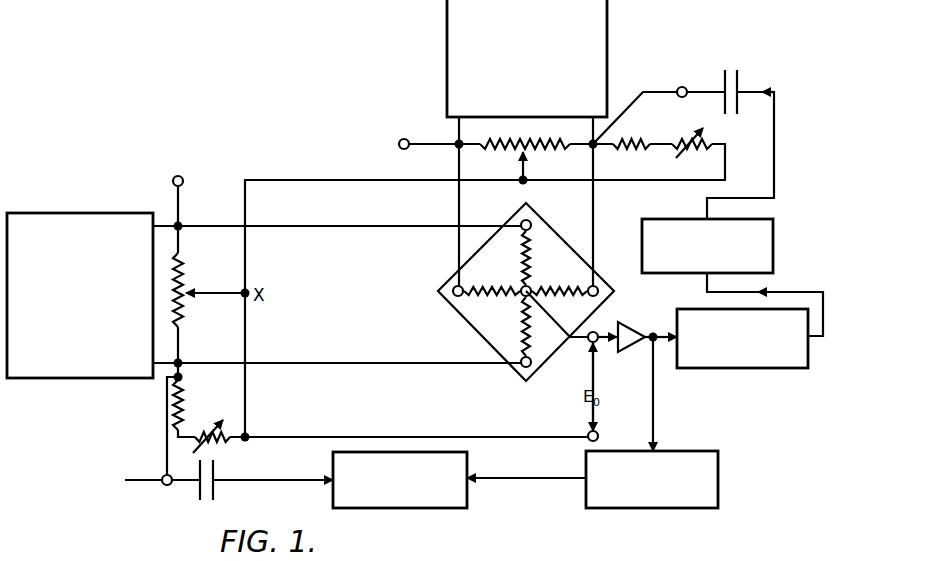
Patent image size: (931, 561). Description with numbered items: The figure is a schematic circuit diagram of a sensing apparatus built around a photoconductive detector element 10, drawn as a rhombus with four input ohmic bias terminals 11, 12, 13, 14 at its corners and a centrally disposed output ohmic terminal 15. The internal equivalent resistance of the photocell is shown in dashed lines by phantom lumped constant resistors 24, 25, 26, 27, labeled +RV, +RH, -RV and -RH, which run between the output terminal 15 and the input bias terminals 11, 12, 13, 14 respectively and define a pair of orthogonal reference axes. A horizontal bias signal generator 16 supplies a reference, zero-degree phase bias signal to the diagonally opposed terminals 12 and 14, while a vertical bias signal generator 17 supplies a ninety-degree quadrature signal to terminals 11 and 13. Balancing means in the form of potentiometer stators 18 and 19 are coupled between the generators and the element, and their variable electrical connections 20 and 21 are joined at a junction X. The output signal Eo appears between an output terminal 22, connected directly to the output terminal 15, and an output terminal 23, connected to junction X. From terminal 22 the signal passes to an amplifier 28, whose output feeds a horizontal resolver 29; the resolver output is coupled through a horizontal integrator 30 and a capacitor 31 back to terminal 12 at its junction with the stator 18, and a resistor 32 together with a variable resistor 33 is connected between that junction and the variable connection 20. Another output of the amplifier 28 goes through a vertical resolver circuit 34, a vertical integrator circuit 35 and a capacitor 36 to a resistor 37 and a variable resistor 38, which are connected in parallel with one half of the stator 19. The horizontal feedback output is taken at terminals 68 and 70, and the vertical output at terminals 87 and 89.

The photoconductive detector element 10 is at (550, 219).
The input ohmic bias terminal 11 is at (521, 223).
The input ohmic bias terminal 12 is at (598, 286).
The input ohmic bias terminal 13 is at (530, 367).
The input ohmic bias terminal 14 is at (454, 287).
The output ohmic terminal 15 is at (531, 296).
The horizontal bias signal generator 16 is at (607, 47).
The vertical bias signal generator 17 is at (78, 213).
The potentiometer stator 18 is at (544, 144).
The potentiometer stator 19 is at (184, 260).
The variable electrical connection 20 is at (528, 157).
The variable electrical connection 21 is at (192, 289).
The output terminal 22 is at (597, 332).
The output terminal 23 is at (598, 436).
The phantom lumped constant resistor 24 is at (521, 253).
The phantom lumped constant resistor 25 is at (570, 287).
The phantom lumped constant resistor 26 is at (531, 338).
The phantom lumped constant resistor 27 is at (472, 296).
The amplifier 28 is at (632, 327).
The horizontal resolver 29 is at (762, 368).
The horizontal integrator 30 is at (773, 236).
The capacitor 31 is at (738, 73).
The resistor 32 is at (635, 142).
The variable resistor 33 is at (708, 140).
The vertical resolver circuit 34 is at (718, 468).
The vertical integrator circuit 35 is at (467, 464).
The capacitor 36 is at (198, 493).
The resistor 37 is at (186, 400).
The variable resistor 38 is at (216, 426).
The terminal 68 is at (678, 88).
The terminal 70 is at (399, 142).
The terminal 87 is at (135, 481).
The terminal 89 is at (183, 178).